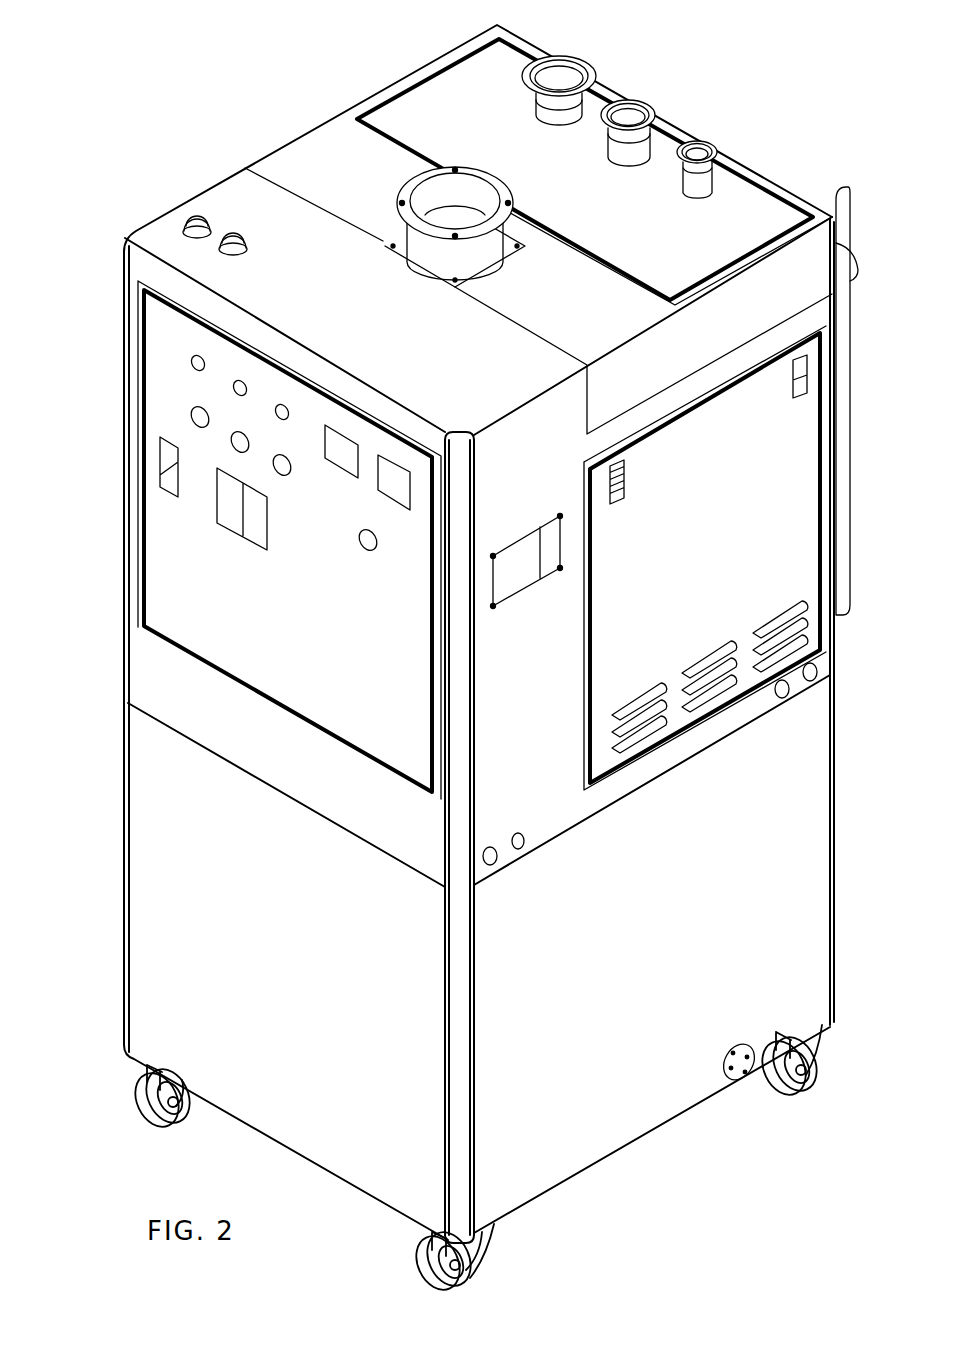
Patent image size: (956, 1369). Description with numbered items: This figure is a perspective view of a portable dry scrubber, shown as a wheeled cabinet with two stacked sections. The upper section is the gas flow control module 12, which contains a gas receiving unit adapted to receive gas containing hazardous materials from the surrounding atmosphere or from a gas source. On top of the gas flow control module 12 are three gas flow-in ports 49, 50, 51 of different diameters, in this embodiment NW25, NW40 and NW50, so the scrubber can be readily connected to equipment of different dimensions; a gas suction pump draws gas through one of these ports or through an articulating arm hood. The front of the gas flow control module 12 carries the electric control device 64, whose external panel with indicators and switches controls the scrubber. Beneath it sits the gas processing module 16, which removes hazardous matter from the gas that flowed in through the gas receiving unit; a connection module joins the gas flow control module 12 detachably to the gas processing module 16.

The gas flow control module 12 is at (128, 657).
The gas processing module 16 is at (127, 1000).
The gas flow-in port 49 is at (599, 70).
The gas flow-in port 50 is at (668, 108).
The gas flow-in port 51 is at (735, 147).
The electric control device 64 is at (138, 558).